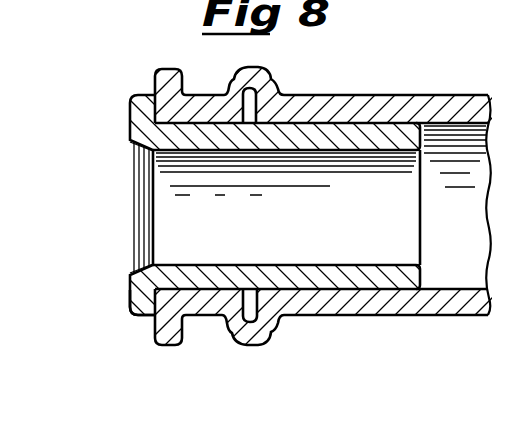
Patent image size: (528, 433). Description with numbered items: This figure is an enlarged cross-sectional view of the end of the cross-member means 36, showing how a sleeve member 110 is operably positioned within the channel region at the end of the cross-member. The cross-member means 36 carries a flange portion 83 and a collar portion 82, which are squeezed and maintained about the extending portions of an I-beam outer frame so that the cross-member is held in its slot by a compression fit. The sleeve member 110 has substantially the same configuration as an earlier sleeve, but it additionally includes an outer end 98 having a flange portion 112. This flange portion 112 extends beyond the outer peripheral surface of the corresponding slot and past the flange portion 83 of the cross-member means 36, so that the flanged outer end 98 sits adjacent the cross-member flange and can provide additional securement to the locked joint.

The cross-member means 36 is at (430, 95).
The flange portion 83 is at (156, 86).
The collar portion 82 is at (274, 84).
The sleeve member 110 is at (313, 270).
The outer end 98 is at (132, 293).
The flange portion 112 is at (134, 316).